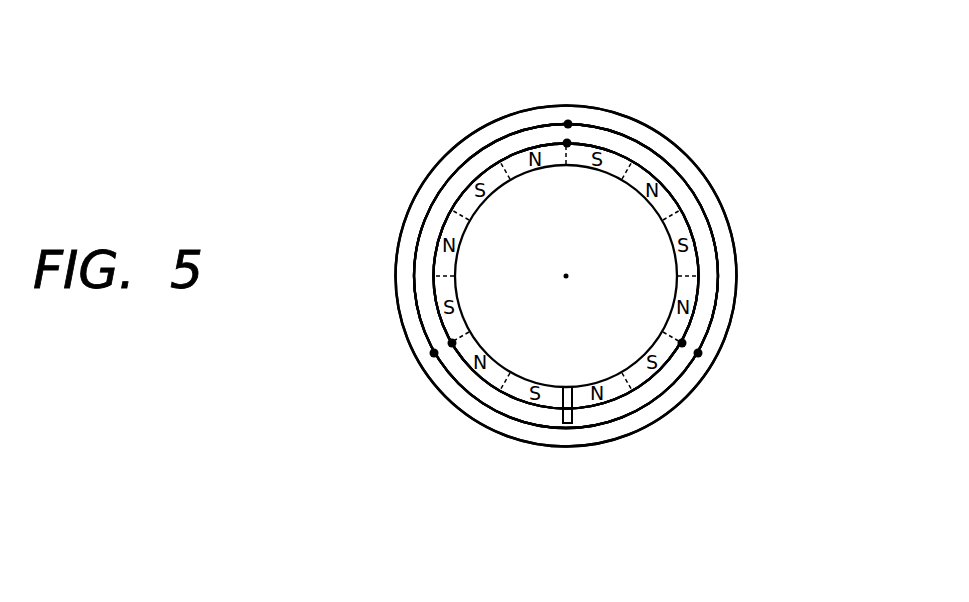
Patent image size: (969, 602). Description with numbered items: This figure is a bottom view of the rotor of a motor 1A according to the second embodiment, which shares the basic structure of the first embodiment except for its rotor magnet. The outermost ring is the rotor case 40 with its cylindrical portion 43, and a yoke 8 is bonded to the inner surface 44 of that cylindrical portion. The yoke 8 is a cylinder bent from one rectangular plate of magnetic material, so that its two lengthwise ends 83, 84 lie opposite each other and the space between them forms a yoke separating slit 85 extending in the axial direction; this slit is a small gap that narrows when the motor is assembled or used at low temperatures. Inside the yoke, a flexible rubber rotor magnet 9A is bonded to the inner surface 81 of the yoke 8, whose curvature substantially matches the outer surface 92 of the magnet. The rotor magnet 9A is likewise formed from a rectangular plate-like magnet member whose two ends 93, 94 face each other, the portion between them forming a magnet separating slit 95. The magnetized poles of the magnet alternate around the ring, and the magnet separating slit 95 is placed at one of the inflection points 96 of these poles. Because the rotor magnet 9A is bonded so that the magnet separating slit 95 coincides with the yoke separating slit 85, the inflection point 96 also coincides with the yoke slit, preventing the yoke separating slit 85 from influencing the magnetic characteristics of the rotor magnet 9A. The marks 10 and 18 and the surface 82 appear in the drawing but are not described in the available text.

The motor 1A is at (670, 54).
The yoke 8 is at (705, 228).
The rotor magnet 9A is at (490, 168).
The pole detection point 10 is at (567, 143).
The pole detection point 18 is at (568, 124).
The rotor case 40 is at (657, 140).
The cylindrical portion 43 is at (566, 276).
The inner surface 44 is at (668, 163).
The inner surface 81 is at (685, 222).
The magnet outer surface 82 is at (718, 248).
The end 83 is at (562, 427).
The end 84 is at (573, 427).
The yoke separating slit 85 is at (567, 434).
The outer surface 92 is at (452, 203).
The end 93 is at (561, 407).
The end 94 is at (574, 407).
The magnet separating slit 95 is at (567, 378).
The inflection point 96 is at (567, 405).